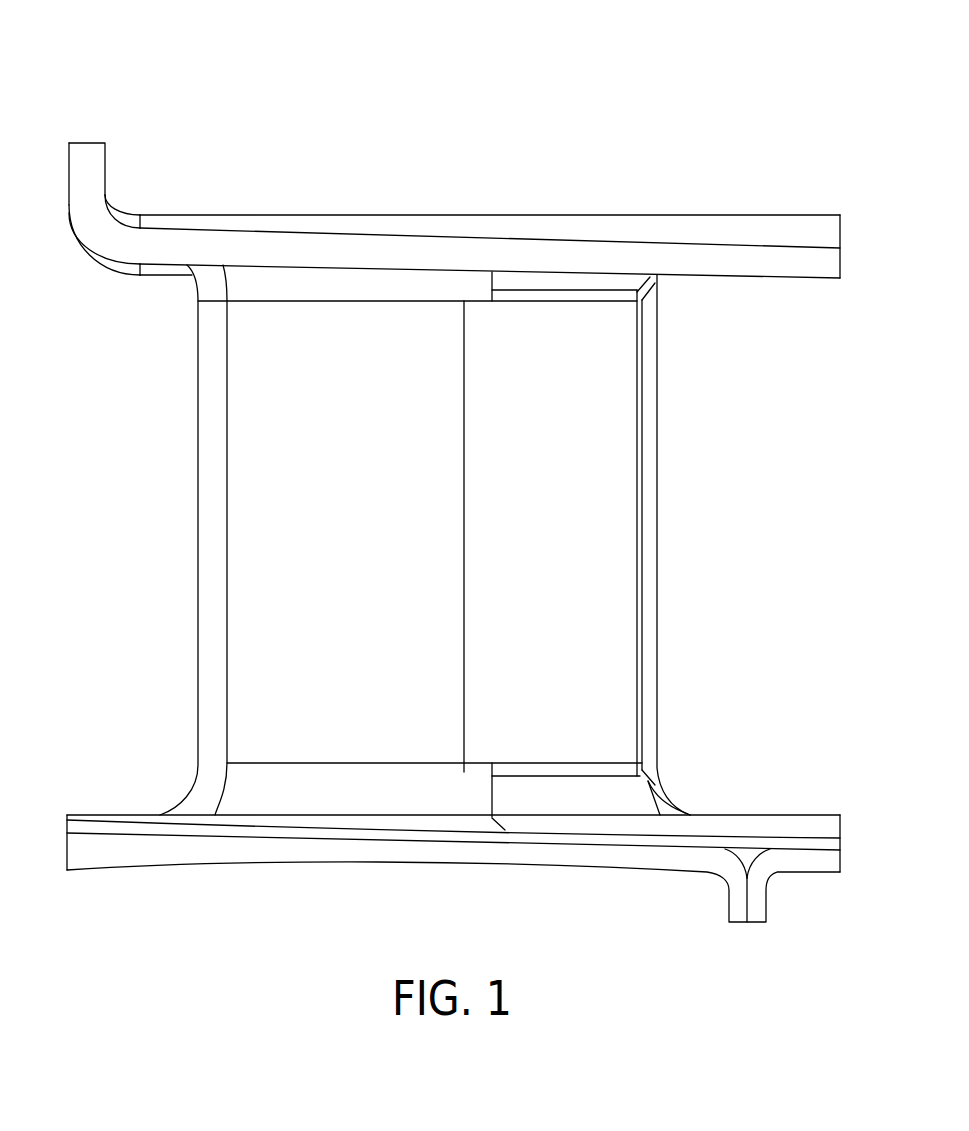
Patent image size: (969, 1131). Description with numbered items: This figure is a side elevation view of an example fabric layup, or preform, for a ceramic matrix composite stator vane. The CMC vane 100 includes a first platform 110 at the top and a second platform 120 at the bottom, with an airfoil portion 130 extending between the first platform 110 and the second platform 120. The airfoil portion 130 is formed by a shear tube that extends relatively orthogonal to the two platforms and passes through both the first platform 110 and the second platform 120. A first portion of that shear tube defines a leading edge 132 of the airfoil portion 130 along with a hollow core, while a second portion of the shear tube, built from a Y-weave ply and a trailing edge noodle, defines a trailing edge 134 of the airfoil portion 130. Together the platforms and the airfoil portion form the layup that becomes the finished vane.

The CMC vane 100 is at (787, 53).
The first platform 110 is at (760, 214).
The second platform 120 is at (148, 868).
The airfoil portion 130 is at (198, 428).
The leading edge 132 is at (198, 577).
The trailing edge 134 is at (657, 577).